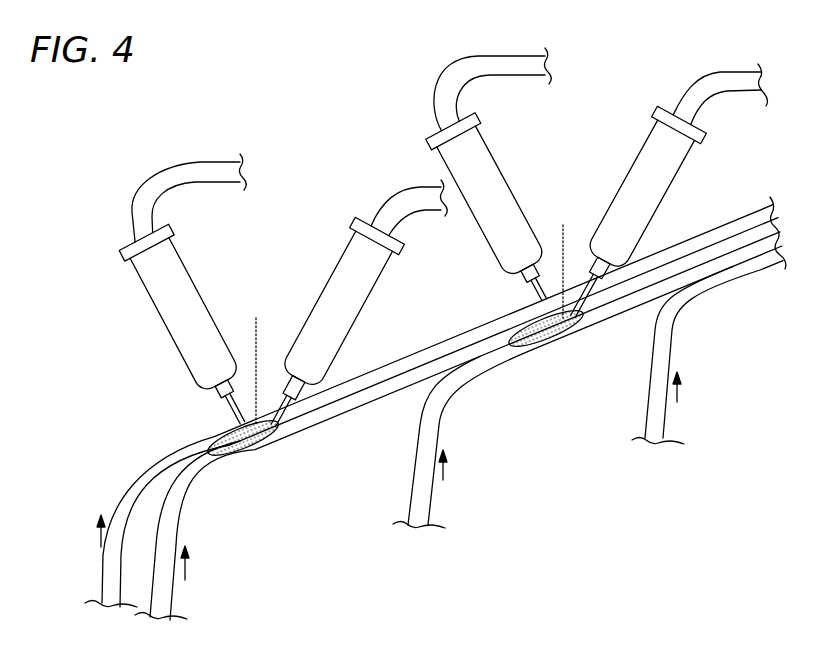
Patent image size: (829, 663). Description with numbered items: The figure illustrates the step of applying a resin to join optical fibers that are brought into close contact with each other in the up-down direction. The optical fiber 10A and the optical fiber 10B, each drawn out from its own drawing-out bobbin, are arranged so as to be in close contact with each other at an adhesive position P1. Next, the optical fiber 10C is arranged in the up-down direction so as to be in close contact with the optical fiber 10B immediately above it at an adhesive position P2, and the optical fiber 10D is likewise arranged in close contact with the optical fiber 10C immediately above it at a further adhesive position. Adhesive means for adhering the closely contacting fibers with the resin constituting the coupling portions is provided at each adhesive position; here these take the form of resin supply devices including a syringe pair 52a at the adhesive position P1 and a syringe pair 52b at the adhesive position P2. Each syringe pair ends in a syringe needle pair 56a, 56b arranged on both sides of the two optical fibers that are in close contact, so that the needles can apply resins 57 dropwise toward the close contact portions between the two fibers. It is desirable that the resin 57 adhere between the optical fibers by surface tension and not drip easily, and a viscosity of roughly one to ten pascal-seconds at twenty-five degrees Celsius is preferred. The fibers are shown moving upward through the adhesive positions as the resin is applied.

The optical fiber 10A is at (132, 508).
The optical fiber 10B is at (176, 520).
The optical fiber 10C is at (440, 412).
The optical fiber 10D is at (664, 421).
The syringe pair 52a is at (170, 306).
The syringe pair 52b is at (493, 172).
The syringe needle pair 56a is at (230, 400).
The syringe needle pair 56b is at (535, 297).
The resin 57 is at (250, 450).
The adhesive position P1 is at (254, 361).
The adhesive position P2 is at (564, 260).